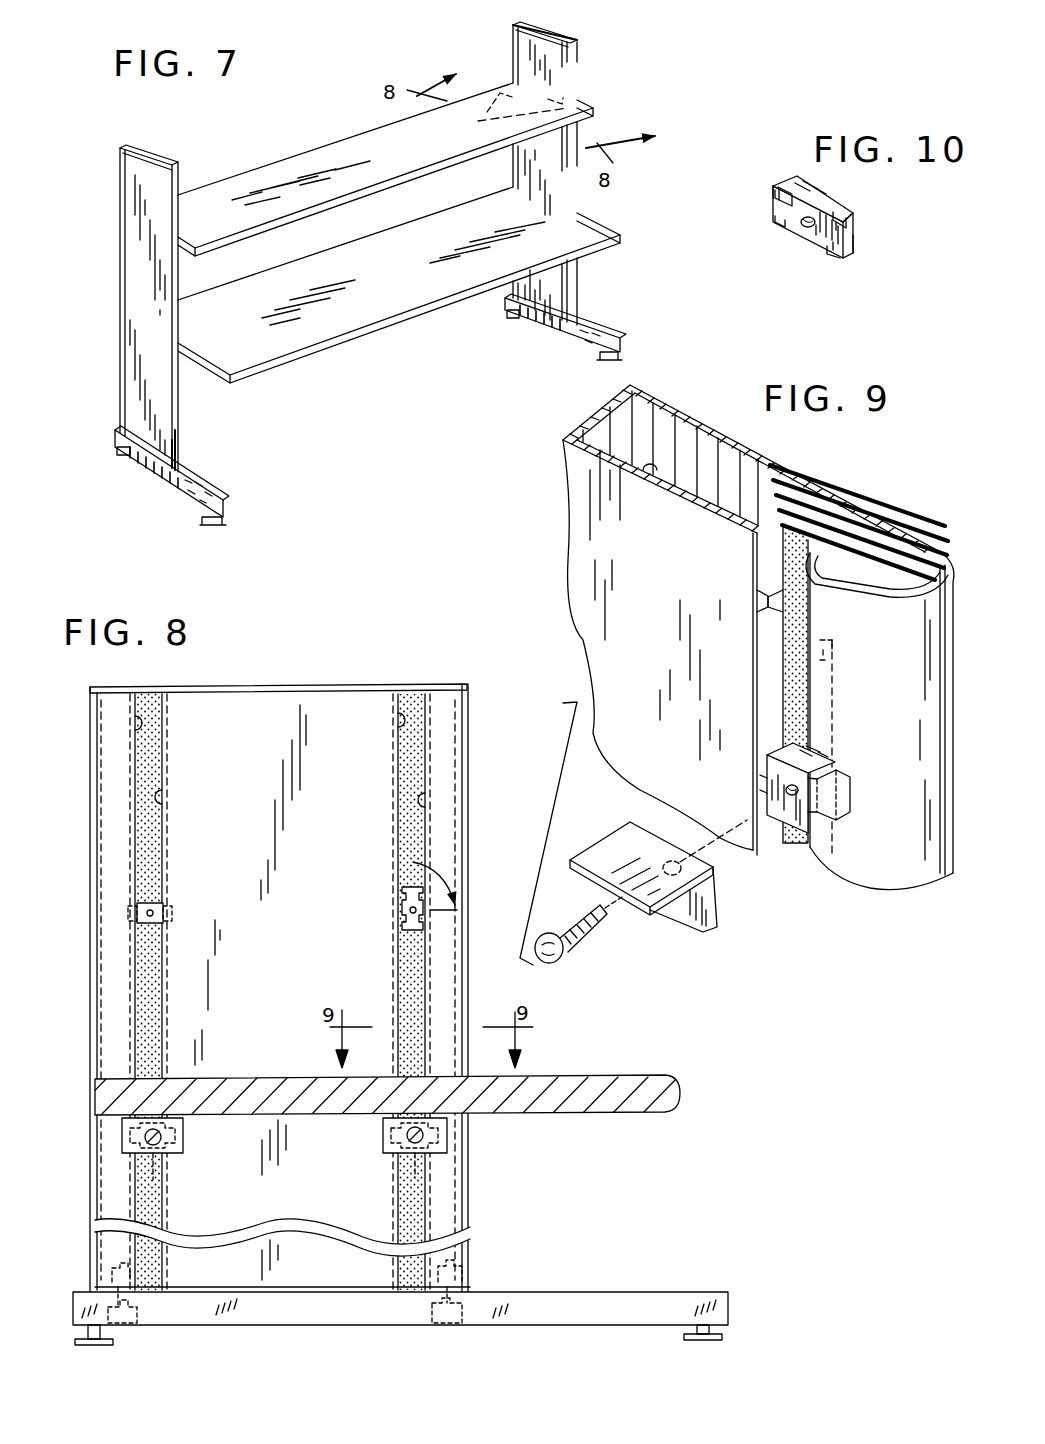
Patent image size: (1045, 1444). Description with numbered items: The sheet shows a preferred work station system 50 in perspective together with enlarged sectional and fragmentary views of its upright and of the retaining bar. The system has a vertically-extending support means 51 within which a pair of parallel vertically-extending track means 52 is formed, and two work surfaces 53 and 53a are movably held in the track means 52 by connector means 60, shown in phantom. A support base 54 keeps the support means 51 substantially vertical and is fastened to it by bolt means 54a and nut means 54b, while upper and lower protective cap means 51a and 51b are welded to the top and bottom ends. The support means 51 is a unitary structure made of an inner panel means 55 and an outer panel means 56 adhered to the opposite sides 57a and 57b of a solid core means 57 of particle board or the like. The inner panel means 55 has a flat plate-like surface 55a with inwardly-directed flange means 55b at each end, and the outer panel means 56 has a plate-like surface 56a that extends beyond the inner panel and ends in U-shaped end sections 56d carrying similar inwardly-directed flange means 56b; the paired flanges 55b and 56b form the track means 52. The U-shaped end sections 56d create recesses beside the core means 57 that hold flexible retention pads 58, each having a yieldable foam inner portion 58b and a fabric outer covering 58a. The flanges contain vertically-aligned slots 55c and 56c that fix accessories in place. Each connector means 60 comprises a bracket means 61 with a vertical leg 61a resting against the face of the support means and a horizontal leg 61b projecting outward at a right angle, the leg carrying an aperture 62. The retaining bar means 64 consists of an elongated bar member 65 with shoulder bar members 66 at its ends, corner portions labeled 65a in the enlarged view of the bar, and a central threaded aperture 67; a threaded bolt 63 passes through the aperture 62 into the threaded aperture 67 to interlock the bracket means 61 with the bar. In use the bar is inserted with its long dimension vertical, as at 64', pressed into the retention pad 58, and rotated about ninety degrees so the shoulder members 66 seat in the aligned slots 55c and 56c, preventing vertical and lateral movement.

In FIG. 7, the work station system 50 is at (381, 366).
In FIG. 7, the support means 51 is at (350, 281).
In FIG. 8, the support means 51 is at (374, 952).
In FIG. 8, the upper protective cap means 51a is at (312, 684).
In FIG. 8, the lower protective cap means 51b is at (310, 1286).
In FIG. 7, the track means 52 is at (545, 62).
In FIG. 7, the work surface 53 is at (348, 296).
In FIG. 8, the work surface 53 is at (265, 1078).
In FIG. 7, the work surface 53a is at (358, 174).
In FIG. 8, the support base 54 is at (400, 1310).
In FIG. 8, the bolt means 54a is at (125, 1323).
In FIG. 8, the nut means 54b is at (132, 1274).
In FIG. 7, the inner panel means 55 is at (520, 173).
In FIG. 9, the inner panel means 55 is at (632, 647).
In FIG. 9, the plate-like surface 55a is at (660, 600).
In FIG. 9, the flange means 55b is at (767, 660).
In FIG. 8, the flange means 55b is at (165, 795).
In FIG. 9, the slots 55c is at (765, 610).
In FIG. 8, the slots 55c is at (398, 755).
In FIG. 7, the outer panel means 56 is at (128, 255).
In FIG. 9, the outer panel means 56 is at (758, 624).
In FIG. 9, the plate-like surface 56a is at (778, 465).
In FIG. 9, the flange means 56b is at (835, 700).
In FIG. 8, the flange means 56b is at (135, 725).
In FIG. 9, the slots 56c is at (836, 643).
In FIG. 8, the slots 56c is at (128, 767).
In FIG. 9, the U-shaped end sections 56d is at (905, 593).
In FIG. 8, the U-shaped end sections 56d is at (90, 708).
In FIG. 9, the core means 57 is at (640, 432).
In FIG. 9, the side of core means 57a is at (643, 473).
In FIG. 9, the side of core means 57b is at (740, 440).
In FIG. 9, the flexible retention pad 58 is at (829, 677).
In FIG. 9, the outer protective covering 58a is at (775, 600).
In FIG. 8, the outer protective covering 58a is at (405, 808).
In FIG. 9, the flexible inner portion 58b is at (875, 515).
In FIG. 7, the connector means 60 is at (487, 120).
In FIG. 9, the bracket means 61 is at (681, 907).
In FIG. 8, the bracket means 61 is at (183, 1150).
In FIG. 9, the vertical leg 61a is at (718, 905).
In FIG. 9, the horizontal leg 61b is at (658, 884).
In FIG. 9, the aperture 62 is at (674, 878).
In FIG. 9, the threaded bolt 63 is at (578, 940).
In FIG. 8, the threaded bolt 63 is at (160, 1178).
In FIG. 10, the retaining bar means 64 is at (821, 214).
In FIG. 9, the retaining bar means 64 is at (797, 784).
In FIG. 8, the retaining bar means 64 is at (232, 1031).
In FIG. 8, the retaining bar means in insertion position 64' is at (391, 896).
In FIG. 10, the elongated bar member 65 is at (818, 243).
In FIG. 9, the elongated bar member 65 is at (770, 810).
In FIG. 10, the nut block shoulder 65a is at (790, 182).
In FIG. 10, the shoulder bar members 66 is at (775, 186).
In FIG. 9, the shoulder bar members 66 is at (766, 769).
In FIG. 8, the shoulder bar members 66 is at (175, 912).
In FIG. 10, the threaded aperture 67 is at (808, 230).
In FIG. 9, the threaded aperture 67 is at (785, 790).